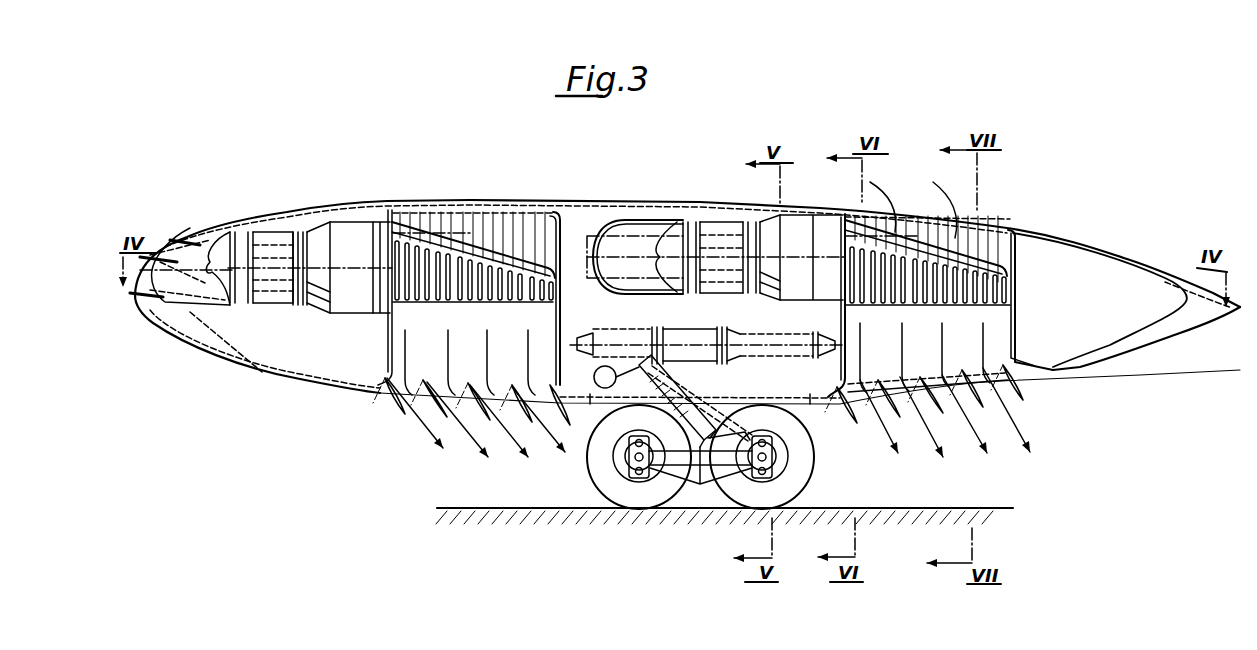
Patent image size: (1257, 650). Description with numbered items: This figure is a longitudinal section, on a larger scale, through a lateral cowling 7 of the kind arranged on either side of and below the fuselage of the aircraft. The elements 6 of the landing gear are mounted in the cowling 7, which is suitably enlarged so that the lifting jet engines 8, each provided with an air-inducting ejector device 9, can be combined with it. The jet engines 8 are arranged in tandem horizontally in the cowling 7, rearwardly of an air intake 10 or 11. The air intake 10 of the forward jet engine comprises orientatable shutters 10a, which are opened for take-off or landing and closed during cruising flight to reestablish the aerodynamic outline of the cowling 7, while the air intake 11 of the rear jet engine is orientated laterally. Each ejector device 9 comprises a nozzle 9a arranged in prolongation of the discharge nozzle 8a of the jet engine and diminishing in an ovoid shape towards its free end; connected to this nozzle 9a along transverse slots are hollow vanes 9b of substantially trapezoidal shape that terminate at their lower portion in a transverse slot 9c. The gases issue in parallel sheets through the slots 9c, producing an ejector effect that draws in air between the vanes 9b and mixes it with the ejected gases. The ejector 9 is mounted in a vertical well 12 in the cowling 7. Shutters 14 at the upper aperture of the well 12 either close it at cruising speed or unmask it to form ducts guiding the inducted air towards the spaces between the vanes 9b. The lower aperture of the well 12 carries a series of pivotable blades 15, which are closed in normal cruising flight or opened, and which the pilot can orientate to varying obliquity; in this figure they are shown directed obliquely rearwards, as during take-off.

The elements of the landing gear 6 is at (703, 470).
The lateral cowling 7 is at (307, 190).
The lifting jet engine 8 is at (344, 240).
The discharge nozzle of the jet engine 8a is at (376, 240).
The air-inducting ejector device 9 is at (478, 250).
The nozzle 9a is at (510, 223).
The hollow vanes 9b is at (412, 300).
The slot 9c is at (490, 304).
The air intake 10 is at (196, 290).
The orientatable shutters 10a is at (165, 245).
The air intake 11 is at (613, 243).
The vertical well 12 is at (425, 344).
The shutters 14 is at (530, 213).
The blades 15 is at (393, 404).